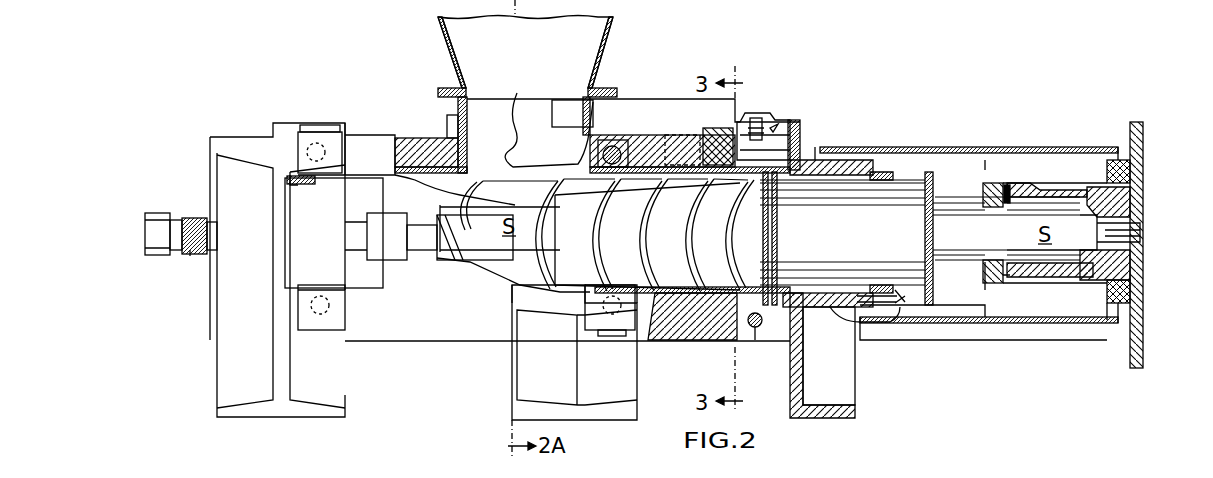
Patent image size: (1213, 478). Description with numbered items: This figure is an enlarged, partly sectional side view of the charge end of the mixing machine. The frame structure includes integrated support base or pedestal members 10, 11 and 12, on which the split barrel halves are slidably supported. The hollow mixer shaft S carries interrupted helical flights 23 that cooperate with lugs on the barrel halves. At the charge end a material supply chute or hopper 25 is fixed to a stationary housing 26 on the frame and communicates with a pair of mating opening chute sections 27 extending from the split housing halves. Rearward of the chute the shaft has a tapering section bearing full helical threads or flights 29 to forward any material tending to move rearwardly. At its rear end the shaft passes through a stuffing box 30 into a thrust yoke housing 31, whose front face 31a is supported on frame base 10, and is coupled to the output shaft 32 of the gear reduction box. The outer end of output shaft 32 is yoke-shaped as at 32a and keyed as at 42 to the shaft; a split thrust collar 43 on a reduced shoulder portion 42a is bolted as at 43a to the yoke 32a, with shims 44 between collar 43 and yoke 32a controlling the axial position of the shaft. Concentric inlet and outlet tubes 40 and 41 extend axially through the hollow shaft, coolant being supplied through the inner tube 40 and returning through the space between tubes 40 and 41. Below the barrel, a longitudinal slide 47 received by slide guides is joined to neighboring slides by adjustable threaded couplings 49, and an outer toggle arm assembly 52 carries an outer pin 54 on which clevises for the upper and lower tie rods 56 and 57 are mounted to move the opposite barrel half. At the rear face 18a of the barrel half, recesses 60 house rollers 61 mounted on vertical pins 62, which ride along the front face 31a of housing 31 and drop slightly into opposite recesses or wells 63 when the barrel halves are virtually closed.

The support base member 10 is at (855, 412).
The support base member 11 is at (617, 420).
The support base member 12 is at (225, 408).
The rear face of barrel half 18a is at (782, 126).
The interrupted helical flights 23 is at (496, 204).
The material supply chute or hopper 25 is at (603, 63).
The stationary housing 26 is at (445, 96).
The opening chute sections 27 is at (440, 131).
The full helical threads or flights 29 is at (660, 140).
The stuffing box 30 is at (878, 160).
The thrust yoke housing 31 is at (810, 160).
The front face of housing 31a is at (722, 322).
The output shaft 32 is at (1143, 207).
The yoke 32a is at (1035, 192).
The inlet tube 40 is at (1140, 228).
The outlet tube 41 is at (1113, 252).
The key 42 is at (1063, 190).
The reduced shoulder portion 42a is at (997, 238).
The split thrust collar 43 is at (993, 184).
The bolts 43a is at (1012, 277).
The shims 44 is at (1008, 184).
The longitudinal slide 47 is at (158, 255).
The adjustable threaded couplings 49 is at (192, 252).
The outer toggle arm assembly 52 is at (378, 255).
The outer pin 54 is at (320, 335).
The upper tie rod 56 is at (615, 138).
The lower tie rod 57 is at (612, 330).
The recesses 60 is at (703, 140).
The rollers 61 is at (668, 122).
The vertical pins 62 is at (730, 128).
The recesses or wells 63 is at (760, 128).